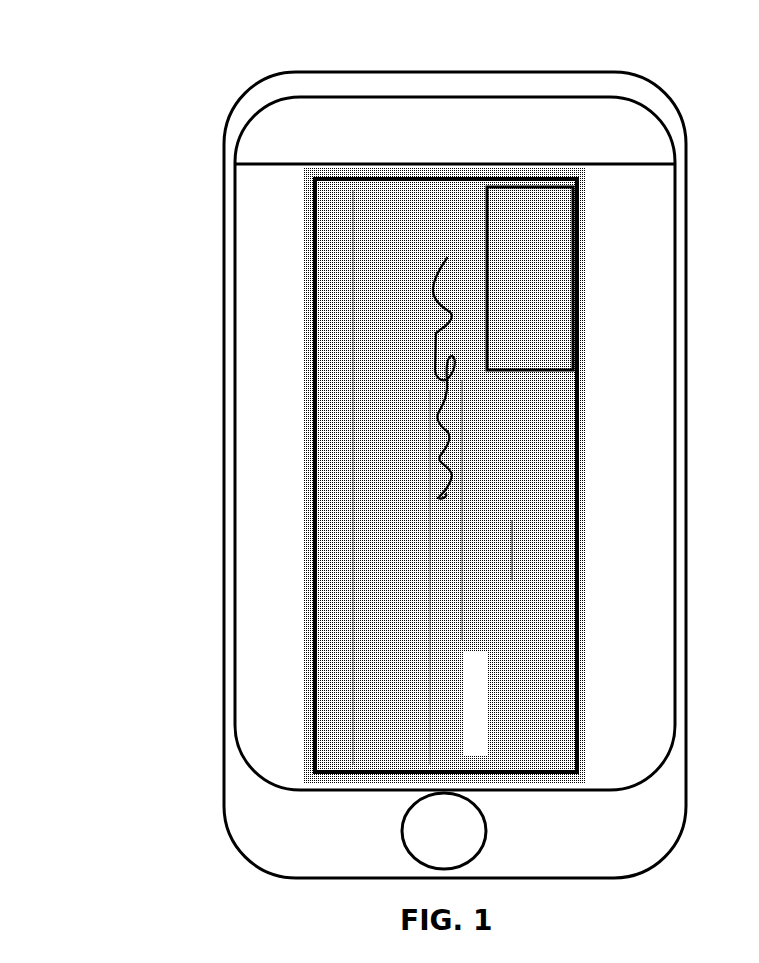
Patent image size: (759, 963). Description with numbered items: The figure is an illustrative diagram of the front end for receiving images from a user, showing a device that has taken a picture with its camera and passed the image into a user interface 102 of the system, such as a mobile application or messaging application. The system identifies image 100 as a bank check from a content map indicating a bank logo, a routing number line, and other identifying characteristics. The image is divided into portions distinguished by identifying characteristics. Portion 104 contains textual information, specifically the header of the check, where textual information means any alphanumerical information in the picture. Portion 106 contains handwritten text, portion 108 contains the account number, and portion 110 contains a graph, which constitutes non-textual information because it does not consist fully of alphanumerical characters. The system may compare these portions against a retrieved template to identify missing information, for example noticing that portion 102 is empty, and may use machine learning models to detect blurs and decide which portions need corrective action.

The image 100 is at (464, 30).
The user interface 102 is at (511, 588).
The portion containing textual information 104 is at (591, 299).
The portion containing handwritten text 106 is at (426, 296).
The portion containing the account number 108 is at (316, 499).
The portion containing a graph 110 is at (309, 661).